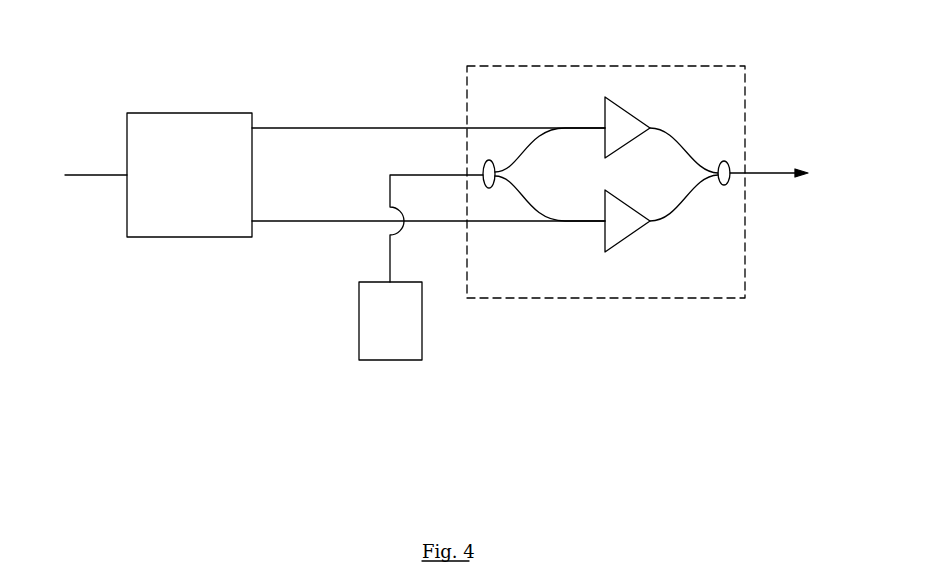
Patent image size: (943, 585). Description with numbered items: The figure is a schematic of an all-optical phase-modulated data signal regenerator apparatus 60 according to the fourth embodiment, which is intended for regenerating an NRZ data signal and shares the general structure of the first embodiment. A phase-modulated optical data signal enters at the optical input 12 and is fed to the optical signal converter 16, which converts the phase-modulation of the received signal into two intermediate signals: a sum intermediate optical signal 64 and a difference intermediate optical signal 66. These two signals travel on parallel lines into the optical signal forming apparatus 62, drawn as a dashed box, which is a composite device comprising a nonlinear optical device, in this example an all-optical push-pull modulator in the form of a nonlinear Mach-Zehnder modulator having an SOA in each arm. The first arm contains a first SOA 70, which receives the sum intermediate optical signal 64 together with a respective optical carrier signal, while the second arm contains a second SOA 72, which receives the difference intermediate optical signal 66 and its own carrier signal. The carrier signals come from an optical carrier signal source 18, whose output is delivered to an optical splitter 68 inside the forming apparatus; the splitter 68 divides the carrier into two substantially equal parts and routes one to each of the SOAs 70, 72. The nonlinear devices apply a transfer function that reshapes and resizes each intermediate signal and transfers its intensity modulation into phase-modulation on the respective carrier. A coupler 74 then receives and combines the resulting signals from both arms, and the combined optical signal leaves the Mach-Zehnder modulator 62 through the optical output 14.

The optical input 12 is at (93, 178).
The optical output 14 is at (773, 177).
The optical signal converter 16 is at (190, 222).
The optical carrier signal source 18 is at (393, 343).
The all-optical phase-modulated data signal regenerator apparatus 60 is at (230, 386).
The optical signal forming apparatus 62 is at (598, 282).
The sum intermediate optical signal 64 is at (283, 222).
The difference intermediate optical signal 66 is at (285, 128).
The optical splitter 68 is at (489, 188).
The first SOA 70 is at (625, 227).
The second SOA 72 is at (622, 120).
The coupler 74 is at (730, 168).